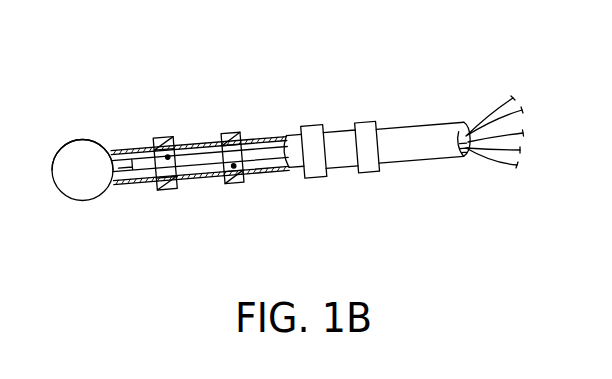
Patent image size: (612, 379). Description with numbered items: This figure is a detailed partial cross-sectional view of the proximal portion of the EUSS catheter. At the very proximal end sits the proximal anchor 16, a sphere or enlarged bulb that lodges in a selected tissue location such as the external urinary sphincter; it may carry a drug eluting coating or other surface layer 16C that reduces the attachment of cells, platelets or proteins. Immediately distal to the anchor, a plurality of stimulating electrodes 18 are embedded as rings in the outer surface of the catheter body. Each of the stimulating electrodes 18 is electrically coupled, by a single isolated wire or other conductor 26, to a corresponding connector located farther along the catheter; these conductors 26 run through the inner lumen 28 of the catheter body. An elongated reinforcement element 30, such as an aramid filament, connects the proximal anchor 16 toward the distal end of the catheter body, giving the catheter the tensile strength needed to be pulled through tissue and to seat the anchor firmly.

The proximal anchor 16 is at (87, 190).
The surface layer 16C is at (83, 140).
The stimulating electrodes 18 is at (367, 122).
The conductor 26 is at (262, 173).
The inner lumen 28 is at (145, 172).
The reinforcement element 30 is at (120, 182).